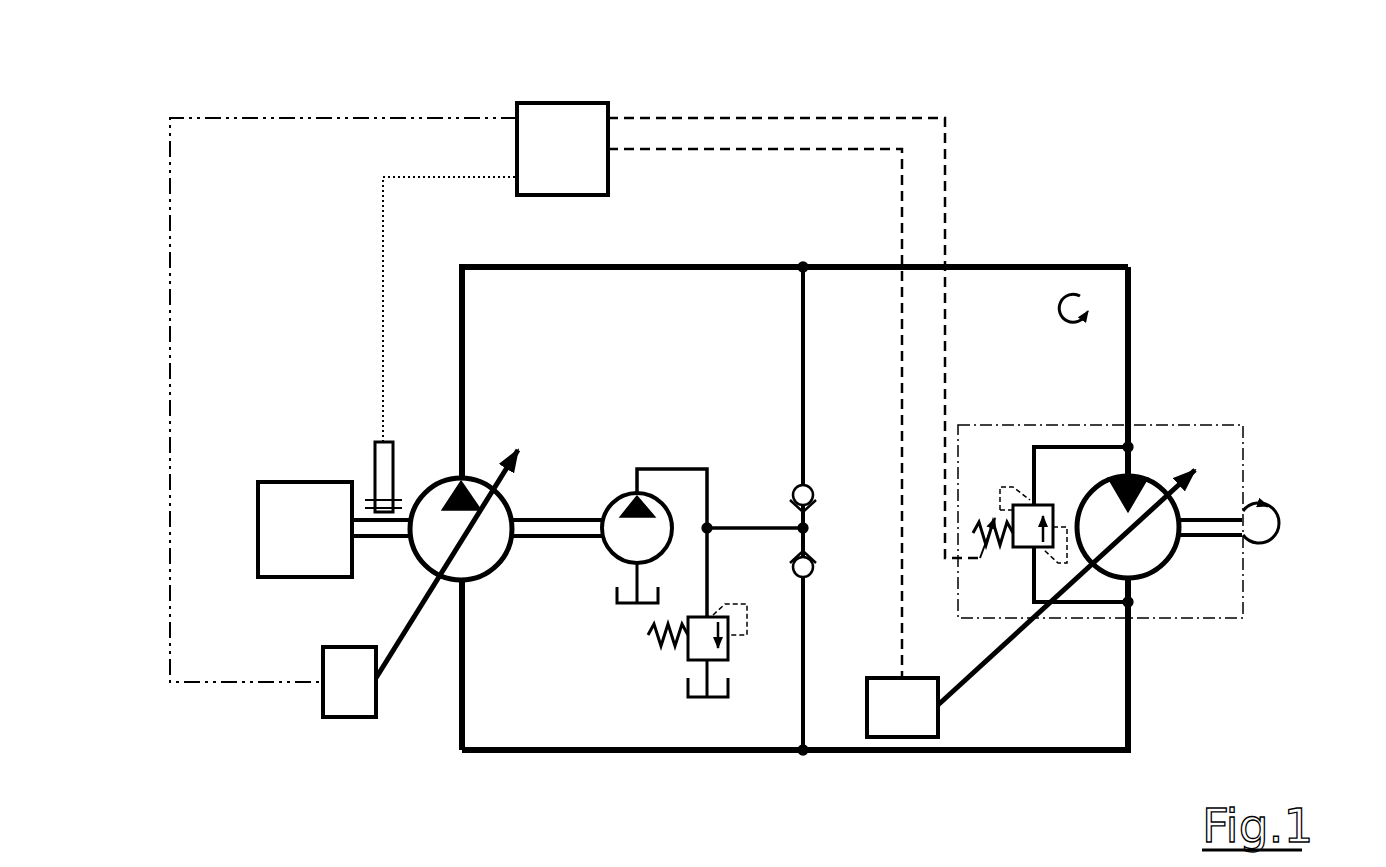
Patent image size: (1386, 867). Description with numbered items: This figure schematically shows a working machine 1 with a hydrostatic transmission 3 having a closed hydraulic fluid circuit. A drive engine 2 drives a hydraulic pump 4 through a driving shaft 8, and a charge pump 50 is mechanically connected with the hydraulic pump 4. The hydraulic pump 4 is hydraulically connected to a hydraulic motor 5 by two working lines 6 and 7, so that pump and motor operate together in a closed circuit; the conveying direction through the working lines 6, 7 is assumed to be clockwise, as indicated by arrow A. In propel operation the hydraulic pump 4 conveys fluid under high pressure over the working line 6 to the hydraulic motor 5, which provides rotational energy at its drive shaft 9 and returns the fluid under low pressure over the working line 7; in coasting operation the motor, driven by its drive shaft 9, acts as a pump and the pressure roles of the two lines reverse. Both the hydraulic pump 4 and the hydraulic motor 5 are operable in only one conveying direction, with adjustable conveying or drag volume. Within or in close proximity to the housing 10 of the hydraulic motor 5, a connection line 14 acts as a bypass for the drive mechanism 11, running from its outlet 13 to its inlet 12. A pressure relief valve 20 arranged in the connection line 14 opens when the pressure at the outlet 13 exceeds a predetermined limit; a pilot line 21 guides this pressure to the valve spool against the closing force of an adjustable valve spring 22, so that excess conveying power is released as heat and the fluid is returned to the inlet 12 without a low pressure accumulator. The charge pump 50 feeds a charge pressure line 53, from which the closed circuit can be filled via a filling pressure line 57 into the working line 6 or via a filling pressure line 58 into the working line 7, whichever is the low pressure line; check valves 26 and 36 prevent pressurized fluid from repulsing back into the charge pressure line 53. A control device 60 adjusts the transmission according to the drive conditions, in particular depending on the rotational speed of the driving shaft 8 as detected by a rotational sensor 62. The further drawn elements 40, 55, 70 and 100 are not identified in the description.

The working machine 1 is at (1190, 156).
The drive engine 2 is at (305, 528).
The hydrostatic transmission 3 is at (766, 461).
The hydraulic pump 4 is at (480, 537).
The hydraulic motor 5 is at (1101, 574).
The working line 6 is at (628, 272).
The working line 7 is at (1133, 705).
The driving shaft 8 is at (390, 527).
The drive shaft 9 is at (1212, 527).
The housing 10 is at (1017, 425).
The drive mechanism 11 is at (1153, 537).
The inlet 12 is at (1132, 462).
The outlet 13 is at (1135, 587).
The connection line 14 is at (1088, 447).
The pressure relief valve 20 is at (1025, 532).
The pilot line 21 is at (1060, 563).
The valve spring 22 is at (973, 532).
The check valve 26 is at (807, 492).
The check valve 36 is at (807, 570).
The pump adjusting device 40 is at (360, 698).
The charge pump 50 is at (620, 527).
The charge pressure line 53 is at (695, 468).
The feed pressure relief valve 55 is at (703, 645).
The filling pressure line 57 is at (803, 355).
The filling pressure line 58 is at (802, 678).
The control device 60 is at (563, 150).
The rotational sensor 62 is at (383, 462).
The motor adjusting device 70 is at (893, 718).
The tank 100 is at (698, 681).
The arrow A is at (1081, 294).